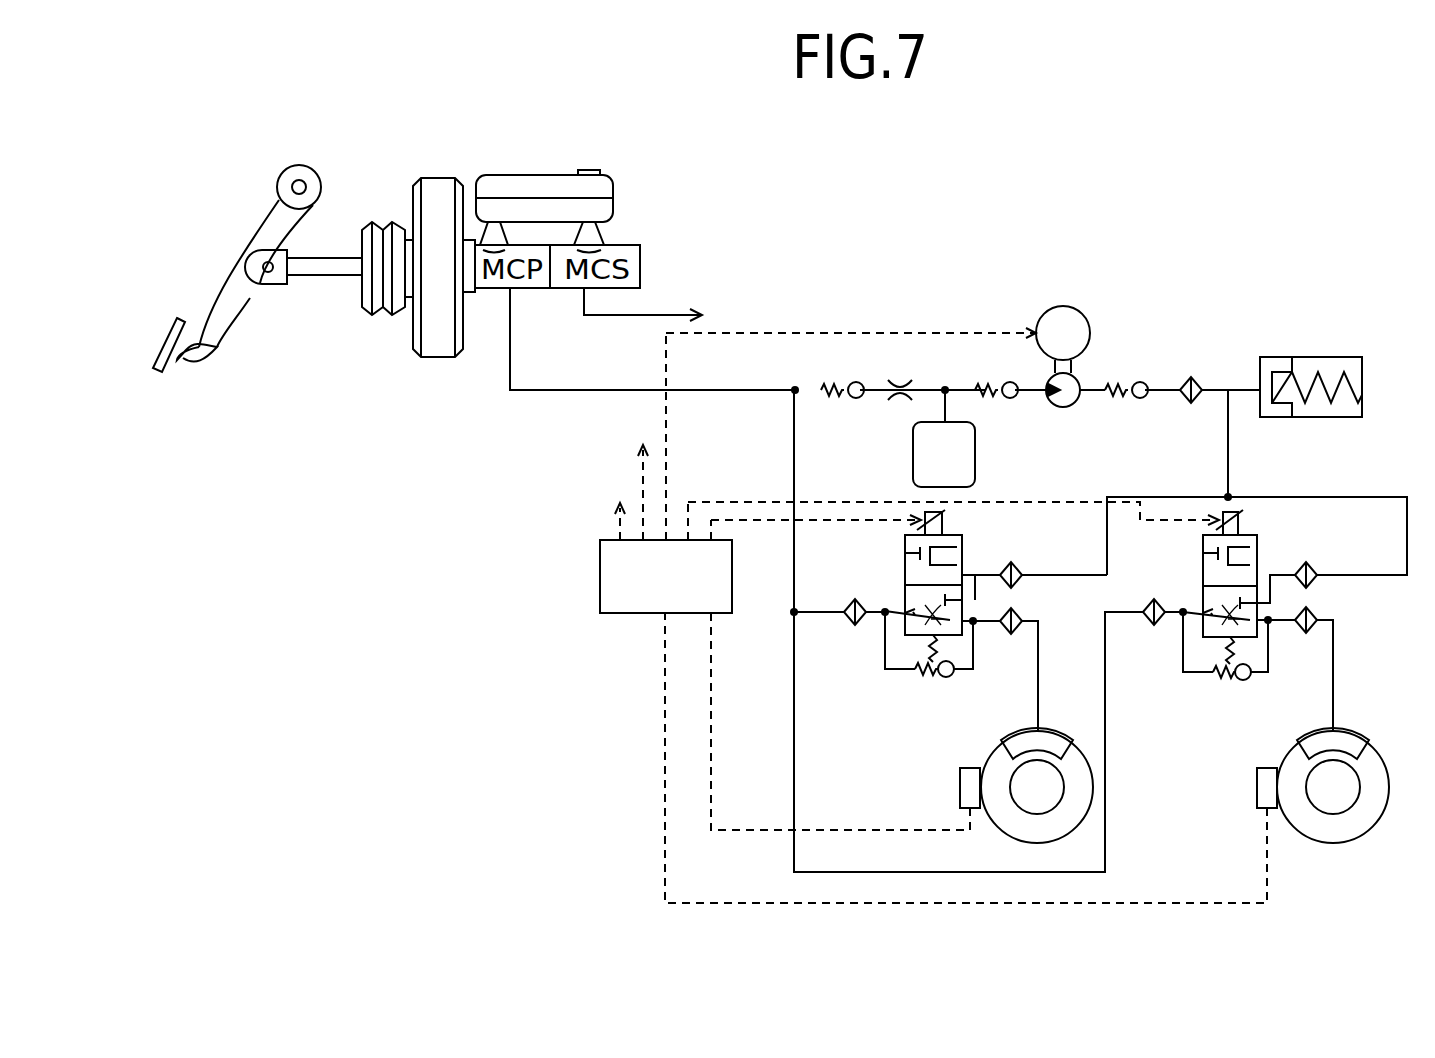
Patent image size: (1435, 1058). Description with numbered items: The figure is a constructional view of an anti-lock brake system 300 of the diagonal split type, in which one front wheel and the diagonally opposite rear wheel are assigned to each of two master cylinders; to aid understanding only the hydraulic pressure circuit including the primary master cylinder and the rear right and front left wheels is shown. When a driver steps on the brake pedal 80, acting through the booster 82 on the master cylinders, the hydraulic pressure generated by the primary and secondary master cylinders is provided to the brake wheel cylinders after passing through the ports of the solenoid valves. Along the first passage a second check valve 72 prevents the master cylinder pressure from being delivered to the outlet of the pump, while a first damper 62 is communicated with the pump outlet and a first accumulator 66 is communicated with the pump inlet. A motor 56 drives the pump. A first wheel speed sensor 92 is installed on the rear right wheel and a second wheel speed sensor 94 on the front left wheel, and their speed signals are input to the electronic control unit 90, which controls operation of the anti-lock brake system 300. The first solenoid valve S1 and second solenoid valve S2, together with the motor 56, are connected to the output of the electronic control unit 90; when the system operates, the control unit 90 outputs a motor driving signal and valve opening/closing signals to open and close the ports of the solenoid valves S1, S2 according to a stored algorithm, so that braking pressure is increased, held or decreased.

The brake pedal 80 is at (203, 343).
The brake booster 82 is at (435, 342).
The motor 56 is at (1063, 307).
The first damper 62 is at (928, 430).
The first accumulator 66 is at (1307, 357).
The second check valve 72 is at (848, 385).
The ECU 90 is at (608, 552).
The first wheel speed sensor 92 is at (972, 772).
The second wheel speed sensor 94 is at (1263, 772).
The anti-lock brake system 300 is at (1246, 226).
The first solenoid valve S1 is at (972, 535).
The second solenoid valve S2 is at (1270, 535).